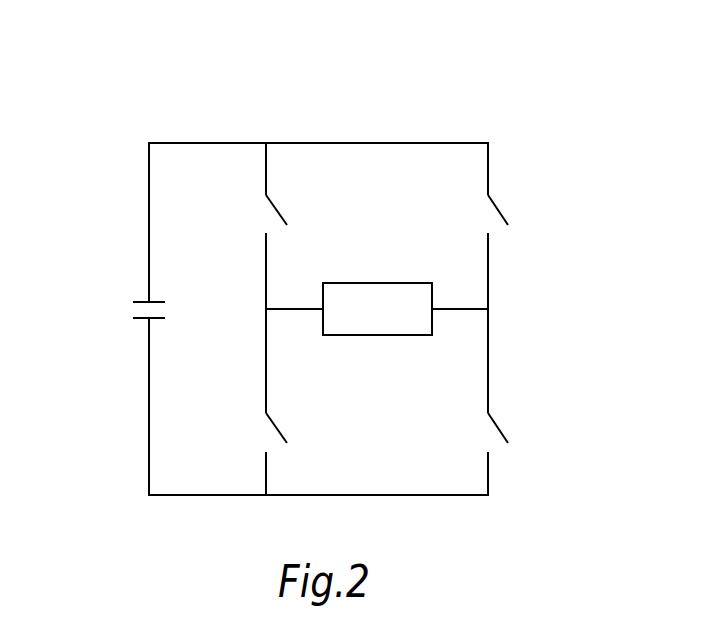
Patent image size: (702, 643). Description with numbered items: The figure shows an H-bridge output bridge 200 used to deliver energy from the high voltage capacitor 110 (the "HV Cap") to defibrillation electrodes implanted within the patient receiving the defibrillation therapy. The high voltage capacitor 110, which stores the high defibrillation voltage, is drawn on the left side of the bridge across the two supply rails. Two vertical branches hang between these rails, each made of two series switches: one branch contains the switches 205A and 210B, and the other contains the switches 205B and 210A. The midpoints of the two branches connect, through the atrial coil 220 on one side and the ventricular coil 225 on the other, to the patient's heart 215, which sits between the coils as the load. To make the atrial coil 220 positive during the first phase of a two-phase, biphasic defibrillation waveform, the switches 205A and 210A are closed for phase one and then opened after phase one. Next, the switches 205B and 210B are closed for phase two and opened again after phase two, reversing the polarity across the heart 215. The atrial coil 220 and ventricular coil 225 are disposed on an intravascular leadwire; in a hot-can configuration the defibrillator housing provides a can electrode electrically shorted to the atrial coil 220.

The defibrillation circuit system 200 is at (107, 68).
The high voltage capacitor 110 is at (155, 300).
The switch 205A is at (283, 209).
The switch 205B is at (503, 209).
The switch 210A is at (503, 427).
The switch 210B is at (283, 427).
The heart 215 is at (378, 283).
The atrial coil 220 is at (228, 343).
The ventricular coil 225 is at (522, 343).